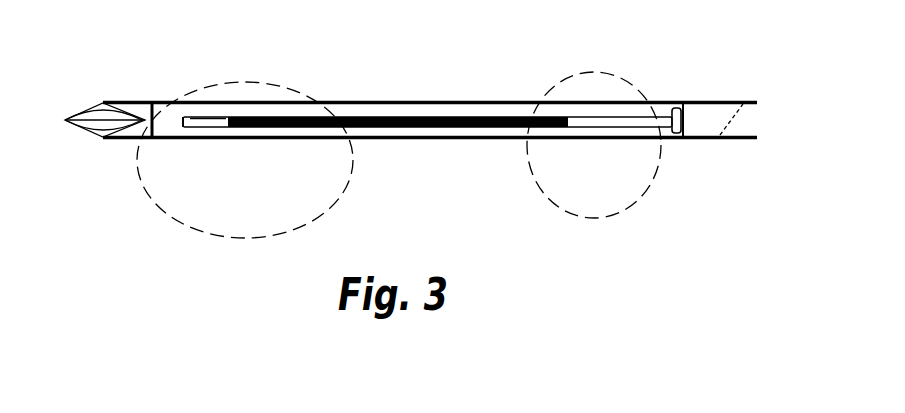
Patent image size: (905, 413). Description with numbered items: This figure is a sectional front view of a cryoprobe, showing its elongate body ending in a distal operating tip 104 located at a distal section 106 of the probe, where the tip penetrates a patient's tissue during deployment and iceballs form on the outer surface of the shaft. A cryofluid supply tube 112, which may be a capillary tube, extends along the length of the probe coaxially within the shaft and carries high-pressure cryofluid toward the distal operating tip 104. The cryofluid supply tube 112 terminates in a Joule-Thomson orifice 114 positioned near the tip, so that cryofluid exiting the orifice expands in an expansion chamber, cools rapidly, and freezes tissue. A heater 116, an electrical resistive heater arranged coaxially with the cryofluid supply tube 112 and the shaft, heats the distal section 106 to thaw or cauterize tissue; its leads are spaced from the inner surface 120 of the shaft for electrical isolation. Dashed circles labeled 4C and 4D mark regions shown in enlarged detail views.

The distal operating tip 104 is at (103, 104).
The distal section 106 is at (185, 83).
The cryofluid supply tube 112 is at (602, 128).
The Joule-Thomson orifice 114 is at (183, 121).
The heater 116 is at (308, 118).
The inner surface 120 is at (402, 135).
The detail view 4C region 4C is at (313, 100).
The detail view 4D region 4D is at (623, 79).